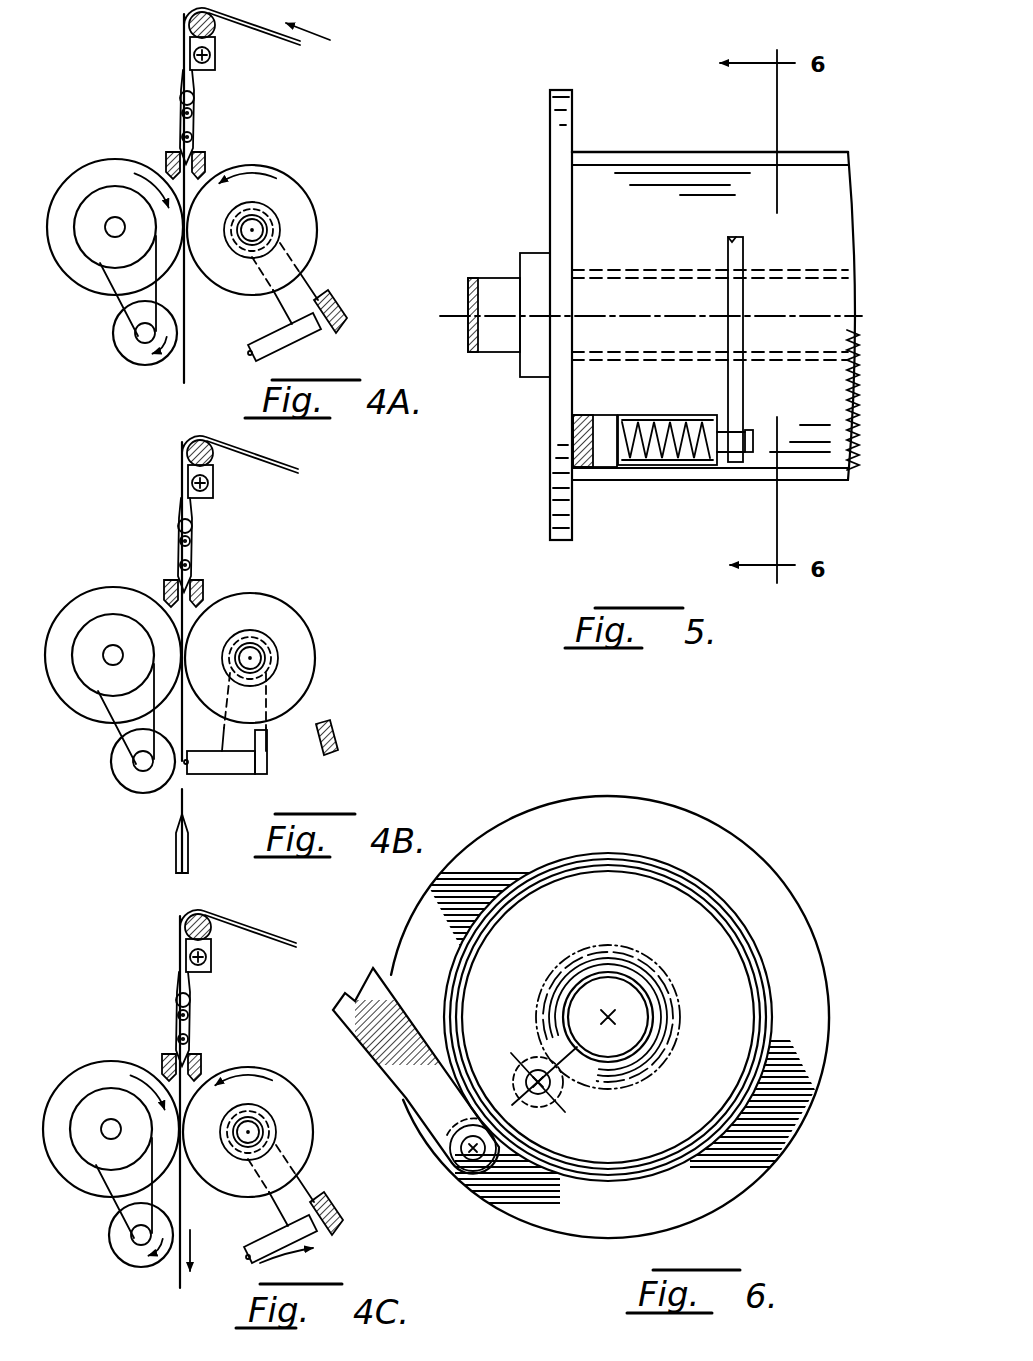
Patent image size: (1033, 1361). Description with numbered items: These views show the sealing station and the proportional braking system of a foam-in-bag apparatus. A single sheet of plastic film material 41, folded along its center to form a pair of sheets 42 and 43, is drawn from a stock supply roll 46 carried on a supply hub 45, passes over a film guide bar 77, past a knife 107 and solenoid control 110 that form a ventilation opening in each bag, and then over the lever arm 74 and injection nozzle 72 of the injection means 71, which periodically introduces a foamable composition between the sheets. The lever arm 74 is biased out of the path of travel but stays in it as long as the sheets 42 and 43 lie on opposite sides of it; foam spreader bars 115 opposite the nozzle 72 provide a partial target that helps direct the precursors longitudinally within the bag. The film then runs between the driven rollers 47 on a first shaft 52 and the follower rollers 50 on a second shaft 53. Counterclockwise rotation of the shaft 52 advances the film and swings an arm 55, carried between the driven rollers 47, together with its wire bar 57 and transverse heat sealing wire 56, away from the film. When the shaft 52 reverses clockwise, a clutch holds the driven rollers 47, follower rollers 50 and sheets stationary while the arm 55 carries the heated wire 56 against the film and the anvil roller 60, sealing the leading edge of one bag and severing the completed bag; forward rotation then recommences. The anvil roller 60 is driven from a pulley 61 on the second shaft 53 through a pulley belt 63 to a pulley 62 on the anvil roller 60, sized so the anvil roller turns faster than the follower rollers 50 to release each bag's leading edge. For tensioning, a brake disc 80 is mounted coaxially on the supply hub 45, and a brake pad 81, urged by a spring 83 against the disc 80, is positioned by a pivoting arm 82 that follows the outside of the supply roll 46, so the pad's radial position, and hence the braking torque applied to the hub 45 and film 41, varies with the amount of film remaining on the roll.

In FIG. 4A, the plastic film material 41 is at (274, 42).
In FIG. 4B, the plastic film material 41 is at (266, 654).
In FIG. 4C, the plastic film material 41 is at (252, 1094).
In FIG. 5, the plastic film material 41 is at (652, 150).
In FIG. 4A, the sheet 42 is at (183, 78).
In FIG. 4B, the sheet 42 is at (148, 843).
In FIG. 4C, the sheet 42 is at (148, 1014).
In FIG. 4A, the sheet 43 is at (214, 66).
In FIG. 4B, the sheet 43 is at (213, 848).
In FIG. 4C, the sheet 43 is at (222, 965).
In FIG. 5, the supply hub 45 is at (494, 285).
In FIG. 6, the supply hub 45 is at (638, 983).
In FIG. 5, the stock supply roll 46 is at (680, 243).
In FIG. 6, the stock supply roll 46 is at (697, 881).
In FIG. 4A, the driven rollers 47 is at (304, 184).
In FIG. 4B, the driven rollers 47 is at (276, 657).
In FIG. 4C, the driven rollers 47 is at (266, 1132).
In FIG. 4A, the follower rollers 50 is at (60, 188).
In FIG. 4B, the follower rollers 50 is at (100, 659).
In FIG. 4C, the follower rollers 50 is at (106, 1119).
In FIG. 4A, the first shaft 52 is at (280, 220).
In FIG. 4B, the first shaft 52 is at (294, 658).
In FIG. 4C, the first shaft 52 is at (287, 1132).
In FIG. 4A, the second shaft 53 is at (121, 218).
In FIG. 4A, the arm 55 is at (312, 292).
In FIG. 4B, the arm 55 is at (281, 734).
In FIG. 4C, the arm 55 is at (308, 1190).
In FIG. 4A, the transverse heat sealing wire 56 is at (248, 350).
In FIG. 4B, the transverse heat sealing wire 56 is at (208, 786).
In FIG. 4C, the transverse heat sealing wire 56 is at (261, 1270).
In FIG. 4A, the wire bar 57 is at (297, 336).
In FIG. 4B, the wire bar 57 is at (221, 746).
In FIG. 4C, the wire bar 57 is at (272, 1232).
In FIG. 4A, the anvil roller 60 is at (140, 362).
In FIG. 4B, the anvil roller 60 is at (124, 773).
In FIG. 4C, the anvil roller 60 is at (122, 1249).
In FIG. 4A, the pulley 61 is at (100, 257).
In FIG. 4B, the pulley 61 is at (101, 628).
In FIG. 4C, the pulley 61 is at (82, 1145).
In FIG. 4A, the pulley 62 is at (135, 336).
In FIG. 4B, the pulley 62 is at (101, 767).
In FIG. 4C, the pulley 62 is at (104, 1245).
In FIG. 4A, the pulley belt 63 is at (107, 293).
In FIG. 4B, the pulley belt 63 is at (95, 714).
In FIG. 4C, the pulley belt 63 is at (93, 1188).
In FIG. 4A, the injection means 71 is at (172, 97).
In FIG. 4B, the injection means 71 is at (142, 522).
In FIG. 4C, the injection means 71 is at (141, 1003).
In FIG. 4A, the injection nozzle 72 is at (182, 136).
In FIG. 4B, the injection nozzle 72 is at (209, 554).
In FIG. 4C, the injection nozzle 72 is at (215, 1028).
In FIG. 4A, the lever arm 74 is at (192, 113).
In FIG. 4B, the lever arm 74 is at (218, 530).
In FIG. 4C, the lever arm 74 is at (215, 1004).
In FIG. 4A, the film guide bar 77 is at (189, 28).
In FIG. 4B, the film guide bar 77 is at (170, 450).
In FIG. 4C, the film guide bar 77 is at (168, 923).
In FIG. 5, the brake disc 80 is at (549, 488).
In FIG. 6, the brake disc 80 is at (578, 798).
In FIG. 5, the brake pad 81 is at (603, 470).
In FIG. 6, the brake pad 81 is at (560, 1095).
In FIG. 5, the arm 82 is at (744, 380).
In FIG. 6, the arm 82 is at (413, 1034).
In FIG. 5, the spring 83 is at (665, 470).
In FIG. 4B, the knife 107 is at (142, 530).
In FIG. 4B, the solenoid control 110 is at (236, 484).
In FIG. 4A, the foam spreader bars 115 is at (170, 156).
In FIG. 4B, the foam spreader bars 115 is at (194, 575).
In FIG. 4C, the foam spreader bars 115 is at (187, 1056).